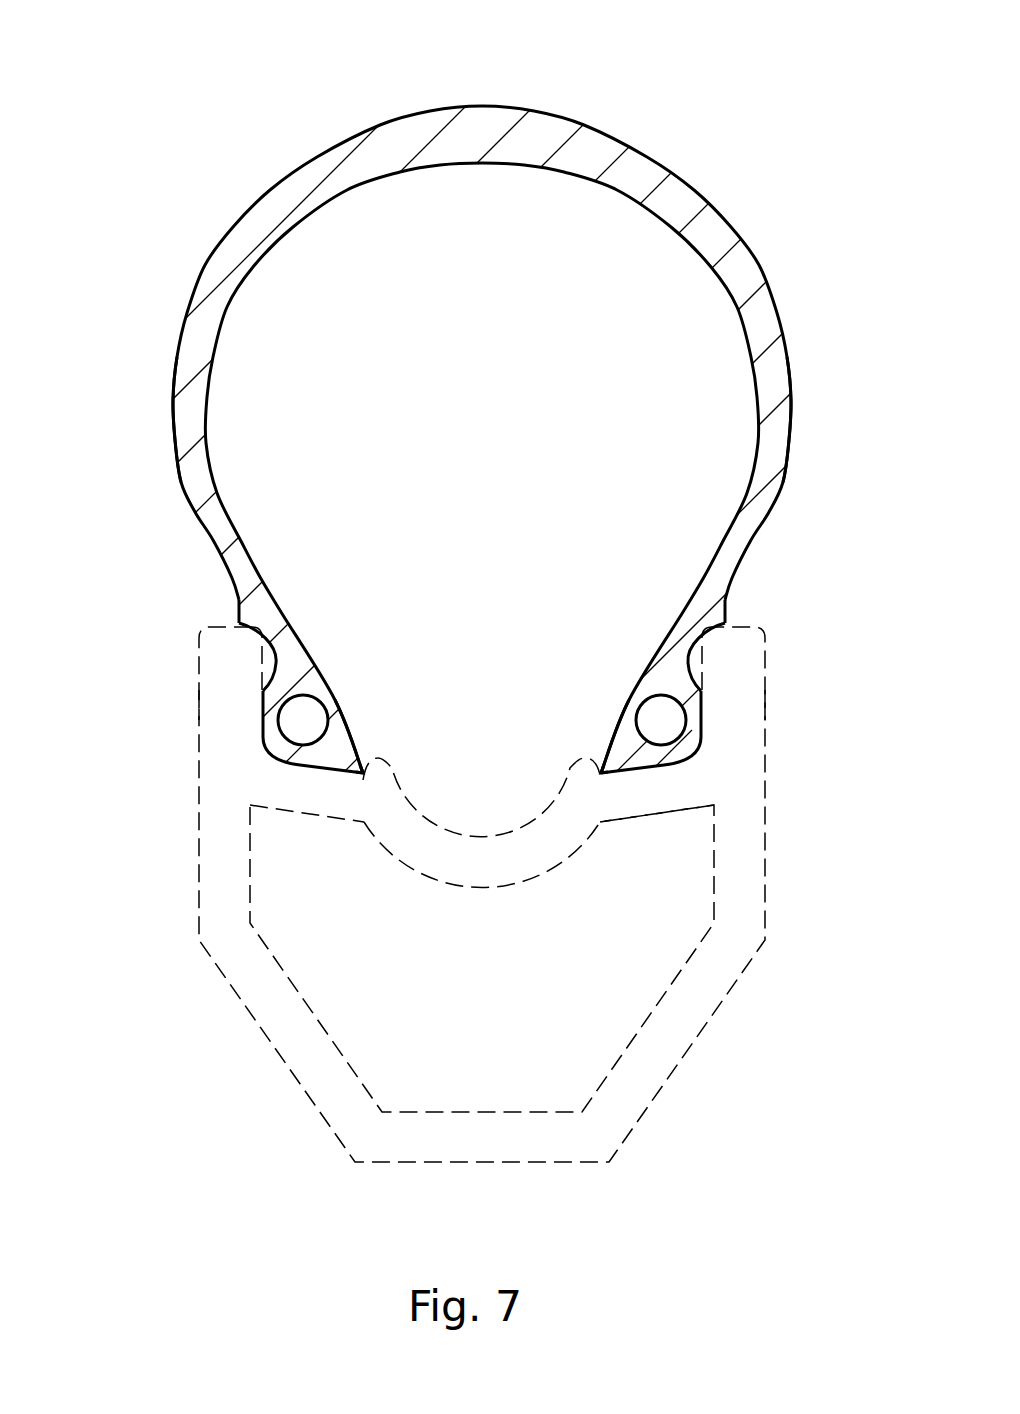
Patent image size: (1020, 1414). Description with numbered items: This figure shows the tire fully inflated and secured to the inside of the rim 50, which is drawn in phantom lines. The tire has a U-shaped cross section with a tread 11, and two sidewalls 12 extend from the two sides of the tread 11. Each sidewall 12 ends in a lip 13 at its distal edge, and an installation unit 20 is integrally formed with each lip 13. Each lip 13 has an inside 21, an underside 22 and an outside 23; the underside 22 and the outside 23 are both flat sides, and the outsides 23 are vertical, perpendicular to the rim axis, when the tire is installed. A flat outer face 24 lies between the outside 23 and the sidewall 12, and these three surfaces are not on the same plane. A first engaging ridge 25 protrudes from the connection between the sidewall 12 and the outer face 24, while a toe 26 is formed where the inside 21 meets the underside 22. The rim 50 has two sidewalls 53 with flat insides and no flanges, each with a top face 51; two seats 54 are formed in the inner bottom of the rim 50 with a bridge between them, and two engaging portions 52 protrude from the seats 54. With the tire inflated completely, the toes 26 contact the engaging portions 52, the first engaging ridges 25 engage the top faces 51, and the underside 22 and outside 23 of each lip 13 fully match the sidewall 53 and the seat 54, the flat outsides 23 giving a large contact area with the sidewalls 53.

The tread 11 is at (545, 132).
The sidewall 12 is at (193, 353).
The lip 13 is at (270, 745).
The installation unit 20 is at (818, 592).
The inside 21 is at (328, 712).
The underside 22 is at (318, 775).
The outside 23 is at (260, 707).
The outer face 24 is at (275, 658).
The first engaging ridge 25 is at (237, 611).
The toe 26 is at (363, 778).
The rim 50 is at (252, 1039).
The top face 51 is at (217, 625).
The engaging portion 52 is at (378, 757).
The sidewall 53 is at (482, 705).
The seat 54 is at (482, 813).